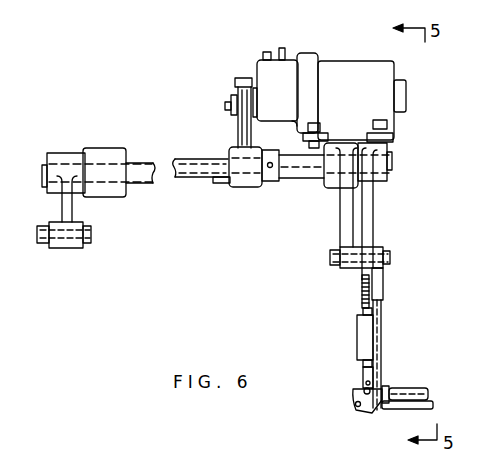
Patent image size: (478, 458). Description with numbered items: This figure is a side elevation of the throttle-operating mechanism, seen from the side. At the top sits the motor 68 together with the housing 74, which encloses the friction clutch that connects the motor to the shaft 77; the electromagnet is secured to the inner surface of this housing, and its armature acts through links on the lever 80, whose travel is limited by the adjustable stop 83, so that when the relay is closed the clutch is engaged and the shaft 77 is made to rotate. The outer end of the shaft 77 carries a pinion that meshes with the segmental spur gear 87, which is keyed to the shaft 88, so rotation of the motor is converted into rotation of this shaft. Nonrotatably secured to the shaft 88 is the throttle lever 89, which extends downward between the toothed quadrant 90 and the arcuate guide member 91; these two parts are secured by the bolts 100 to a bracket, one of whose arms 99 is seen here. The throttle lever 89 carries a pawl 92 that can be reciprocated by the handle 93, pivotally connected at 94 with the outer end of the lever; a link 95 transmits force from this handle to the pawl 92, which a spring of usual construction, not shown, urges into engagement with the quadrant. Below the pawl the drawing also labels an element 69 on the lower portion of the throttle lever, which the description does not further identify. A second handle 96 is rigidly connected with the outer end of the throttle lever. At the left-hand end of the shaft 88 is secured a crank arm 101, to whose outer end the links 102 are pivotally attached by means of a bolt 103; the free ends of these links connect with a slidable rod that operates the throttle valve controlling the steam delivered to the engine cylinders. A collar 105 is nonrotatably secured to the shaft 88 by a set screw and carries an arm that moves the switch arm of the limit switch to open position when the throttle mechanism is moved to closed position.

The motor 68 is at (360, 71).
The block 69 is at (357, 345).
The housing 74 is at (285, 93).
The shaft 77 is at (231, 104).
The lever 80 is at (286, 52).
The adjustable stop 83 is at (264, 52).
The segmental spur gear 87 is at (242, 78).
The shaft 88 is at (143, 179).
The throttle lever 89 is at (374, 236).
The toothed quadrant 90 is at (362, 282).
The arcuate guide member 91 is at (383, 297).
The pawl 92 is at (362, 312).
The handle 93 is at (403, 388).
The pivot 94 is at (356, 404).
The link 95 is at (363, 378).
The handle 96 is at (415, 409).
The bracket arm 99 is at (340, 218).
The bolts 100 is at (392, 256).
The crank arm 101 is at (62, 200).
The links 102 is at (57, 244).
The bolt 103 is at (91, 233).
The collar 105 is at (272, 182).